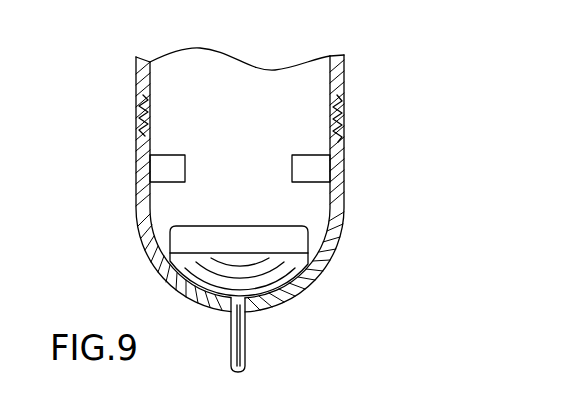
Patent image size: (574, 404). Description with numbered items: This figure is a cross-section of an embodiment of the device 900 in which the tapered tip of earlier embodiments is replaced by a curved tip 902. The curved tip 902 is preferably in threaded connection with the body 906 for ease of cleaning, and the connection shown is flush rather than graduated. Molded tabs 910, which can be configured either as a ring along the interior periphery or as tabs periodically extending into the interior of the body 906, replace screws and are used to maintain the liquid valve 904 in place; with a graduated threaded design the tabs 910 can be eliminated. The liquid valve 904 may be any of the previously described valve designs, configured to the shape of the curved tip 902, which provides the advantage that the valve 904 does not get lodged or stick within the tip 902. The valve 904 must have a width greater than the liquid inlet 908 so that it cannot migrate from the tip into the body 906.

The dispensing container 900 is at (276, 210).
The curved tip 902 is at (331, 266).
The liquid valve 904 is at (246, 372).
The body 906 is at (141, 72).
The liquid inlet 908 is at (233, 180).
The molded tabs 910 is at (171, 166).